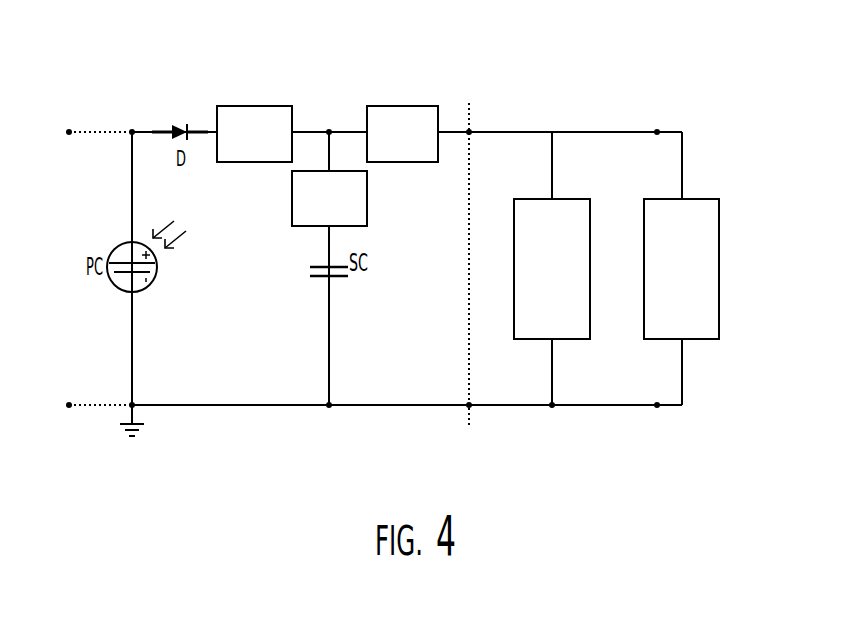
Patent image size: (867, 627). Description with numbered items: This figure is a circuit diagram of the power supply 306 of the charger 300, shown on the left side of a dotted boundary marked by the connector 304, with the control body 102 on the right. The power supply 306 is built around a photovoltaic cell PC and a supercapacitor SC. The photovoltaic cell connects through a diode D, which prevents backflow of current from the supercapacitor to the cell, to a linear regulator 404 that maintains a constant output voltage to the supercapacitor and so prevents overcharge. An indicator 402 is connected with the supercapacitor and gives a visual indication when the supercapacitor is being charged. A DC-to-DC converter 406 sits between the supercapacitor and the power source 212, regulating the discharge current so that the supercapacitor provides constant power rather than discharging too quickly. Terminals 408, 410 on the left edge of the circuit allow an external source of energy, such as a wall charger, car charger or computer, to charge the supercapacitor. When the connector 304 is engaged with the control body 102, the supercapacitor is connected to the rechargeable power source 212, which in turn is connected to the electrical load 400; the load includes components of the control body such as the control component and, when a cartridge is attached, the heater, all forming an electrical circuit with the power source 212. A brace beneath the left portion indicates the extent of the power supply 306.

The control body 102 is at (655, 61).
The power source 212 is at (578, 340).
The charger 300 is at (250, 52).
The connector 304 is at (598, 112).
The power supply 306 is at (455, 447).
The electrical load 400 is at (695, 198).
The indicator 402 is at (367, 198).
The linear regulator 404 is at (254, 106).
The DC-to-DC converter 406 is at (403, 106).
The terminal 408 is at (69, 130).
The terminal 410 is at (69, 403).